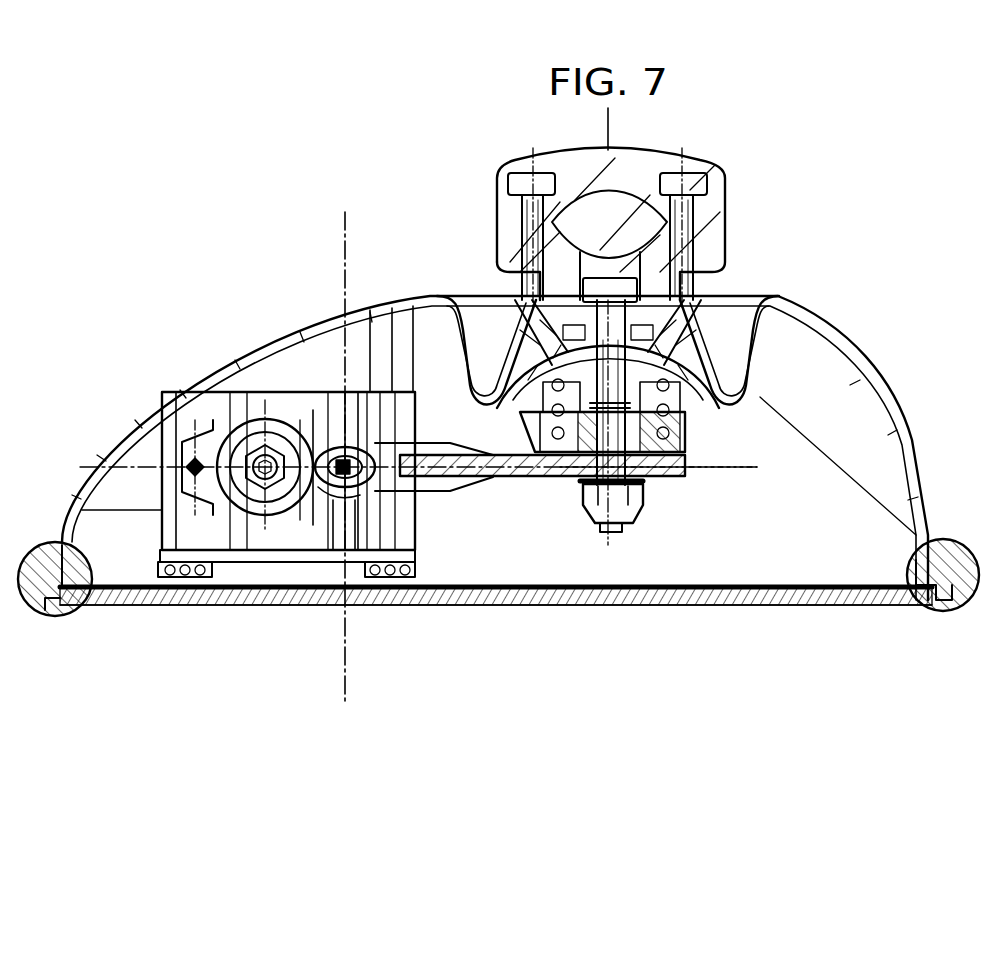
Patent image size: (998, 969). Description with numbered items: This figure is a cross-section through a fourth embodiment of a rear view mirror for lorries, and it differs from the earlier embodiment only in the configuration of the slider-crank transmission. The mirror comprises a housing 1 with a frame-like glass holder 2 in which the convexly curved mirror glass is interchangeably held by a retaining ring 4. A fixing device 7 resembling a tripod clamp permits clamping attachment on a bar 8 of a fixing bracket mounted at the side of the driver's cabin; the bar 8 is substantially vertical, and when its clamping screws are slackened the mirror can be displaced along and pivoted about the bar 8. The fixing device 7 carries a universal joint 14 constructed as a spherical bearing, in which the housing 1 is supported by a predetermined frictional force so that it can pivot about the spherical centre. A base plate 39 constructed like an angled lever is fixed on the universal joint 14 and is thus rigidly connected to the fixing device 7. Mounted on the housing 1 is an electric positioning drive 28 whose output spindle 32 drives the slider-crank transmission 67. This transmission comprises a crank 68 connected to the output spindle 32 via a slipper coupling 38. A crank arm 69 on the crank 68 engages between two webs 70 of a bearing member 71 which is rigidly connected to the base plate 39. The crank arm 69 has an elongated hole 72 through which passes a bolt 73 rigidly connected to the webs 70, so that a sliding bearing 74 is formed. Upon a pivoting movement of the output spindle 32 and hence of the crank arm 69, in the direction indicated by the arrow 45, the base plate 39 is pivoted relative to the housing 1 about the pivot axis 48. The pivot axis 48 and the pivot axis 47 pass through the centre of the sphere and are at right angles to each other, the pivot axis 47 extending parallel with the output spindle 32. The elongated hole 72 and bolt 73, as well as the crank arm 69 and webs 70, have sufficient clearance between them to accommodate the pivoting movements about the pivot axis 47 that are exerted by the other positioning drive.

The housing 1 is at (846, 316).
The glass holder 2 is at (935, 607).
The retaining ring 4 is at (952, 606).
The fixing device 7 is at (490, 180).
The bar 8 is at (345, 228).
The universal joint 14 is at (513, 322).
The positioning drive 28 is at (293, 392).
The output spindle 32 is at (232, 580).
The slipper coupling 38 is at (265, 530).
The base plate 39 is at (513, 478).
The arrow 45 is at (312, 500).
The pivot axis 47 is at (743, 470).
The pivot axis 48 is at (663, 480).
The slider-crank transmission 67 is at (378, 495).
The crank 68 is at (316, 455).
The crank arm 69 is at (386, 482).
The webs 70 is at (372, 460).
The bearing member 71 is at (425, 446).
The elongated hole 72 is at (355, 505).
The bolt 73 is at (346, 448).
The sliding bearing 74 is at (333, 505).